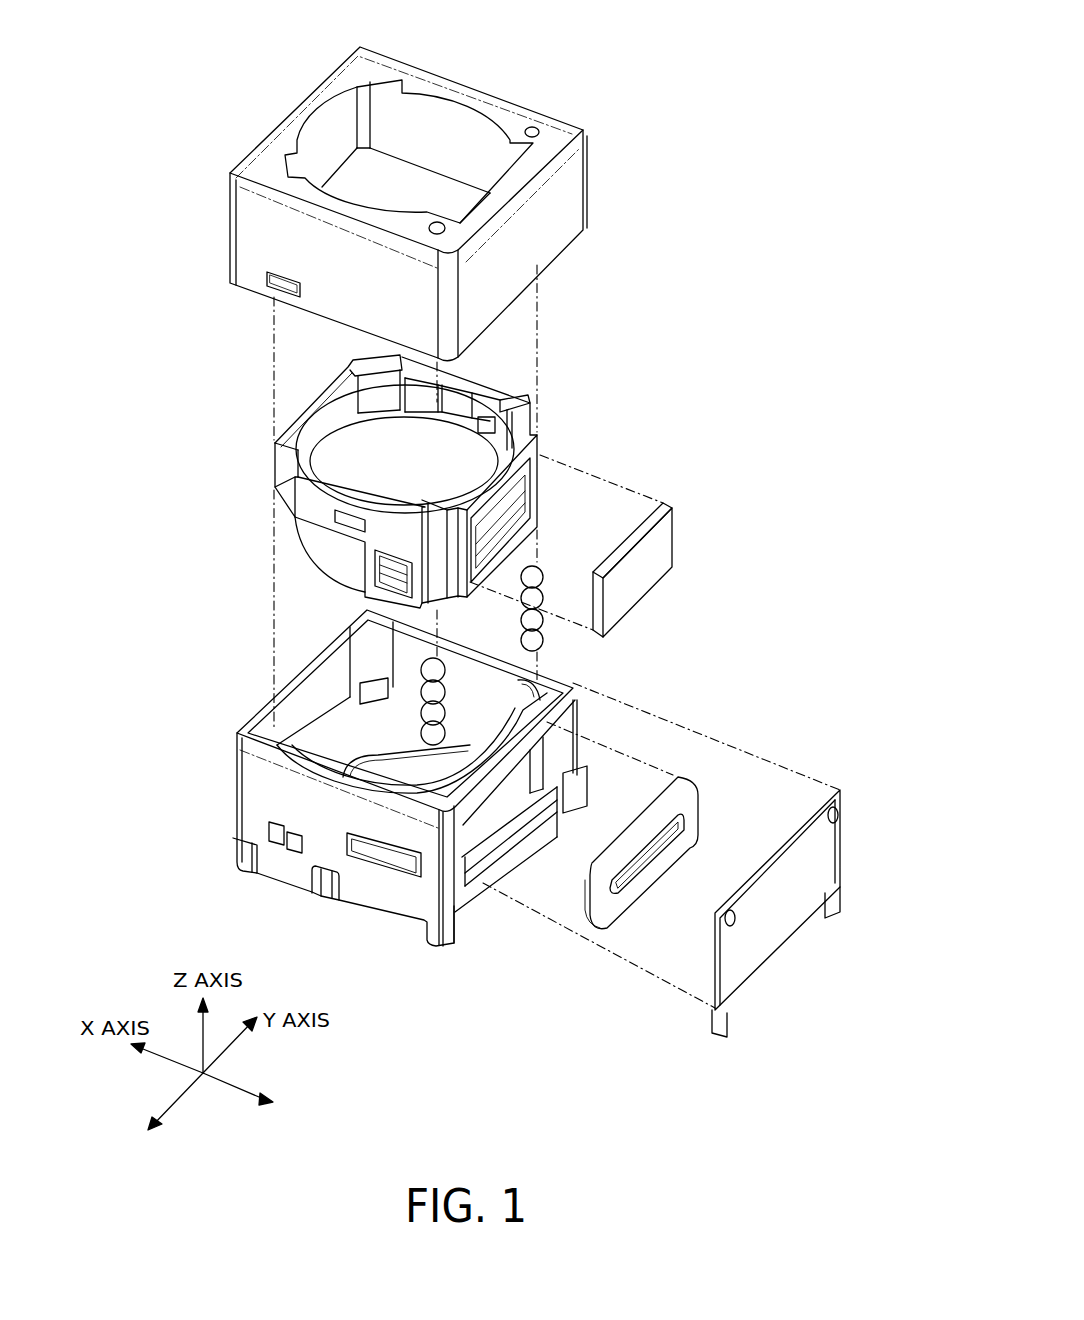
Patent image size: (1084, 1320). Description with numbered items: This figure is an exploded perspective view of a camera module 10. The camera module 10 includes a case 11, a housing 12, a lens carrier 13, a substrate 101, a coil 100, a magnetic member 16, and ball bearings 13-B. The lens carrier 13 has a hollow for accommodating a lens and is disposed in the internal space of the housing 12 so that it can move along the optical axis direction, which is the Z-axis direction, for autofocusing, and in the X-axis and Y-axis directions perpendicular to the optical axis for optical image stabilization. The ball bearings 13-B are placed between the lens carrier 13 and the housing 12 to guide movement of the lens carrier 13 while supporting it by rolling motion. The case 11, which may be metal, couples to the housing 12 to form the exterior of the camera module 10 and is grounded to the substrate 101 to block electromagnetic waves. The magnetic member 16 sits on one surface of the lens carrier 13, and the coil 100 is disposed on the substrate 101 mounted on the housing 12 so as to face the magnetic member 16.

The camera module 10 is at (243, 38).
The case 11 is at (572, 193).
The housing 12 is at (253, 783).
The lens carrier 13 is at (275, 475).
The ball bearings 13-B is at (532, 566).
The magnetic member 16 is at (663, 547).
The coil 100 is at (688, 787).
The substrate 101 is at (842, 800).